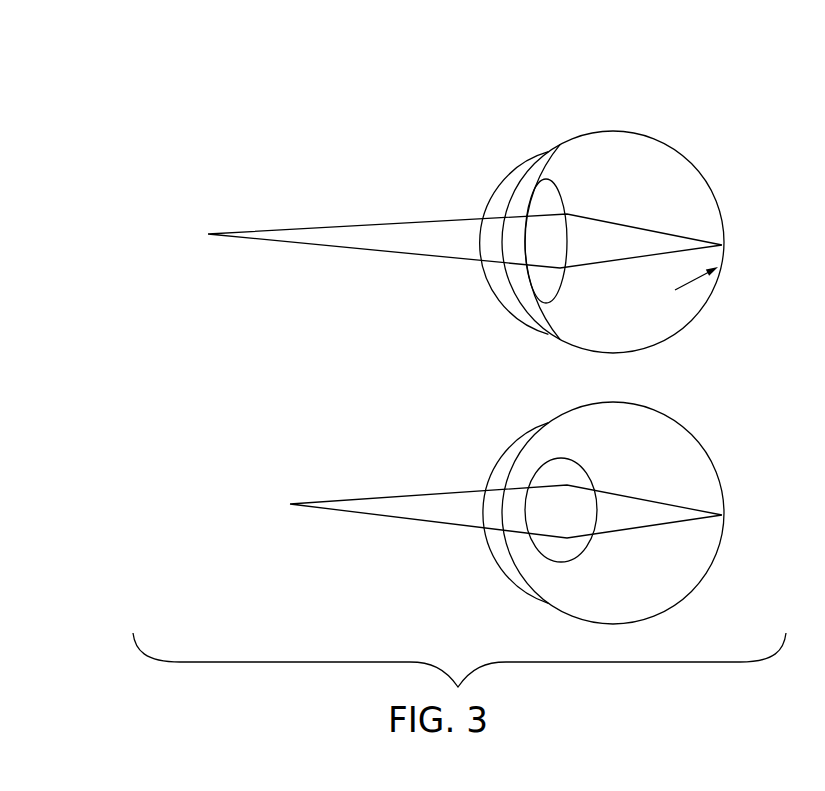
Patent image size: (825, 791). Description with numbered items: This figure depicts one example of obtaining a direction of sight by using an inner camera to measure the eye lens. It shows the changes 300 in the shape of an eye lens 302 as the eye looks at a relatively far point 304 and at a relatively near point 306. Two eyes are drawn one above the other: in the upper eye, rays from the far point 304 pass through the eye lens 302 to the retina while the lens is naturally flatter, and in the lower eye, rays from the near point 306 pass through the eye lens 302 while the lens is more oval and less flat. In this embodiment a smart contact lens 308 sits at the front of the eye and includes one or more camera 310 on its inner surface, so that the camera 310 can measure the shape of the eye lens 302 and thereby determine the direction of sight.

The changes in the shape of an eye lens 300 is at (690, 96).
The eye lens 302 is at (543, 290).
The far point 304 is at (208, 234).
The near point 306 is at (290, 504).
The smart contact lens 308 is at (505, 208).
The camera 310 is at (514, 199).